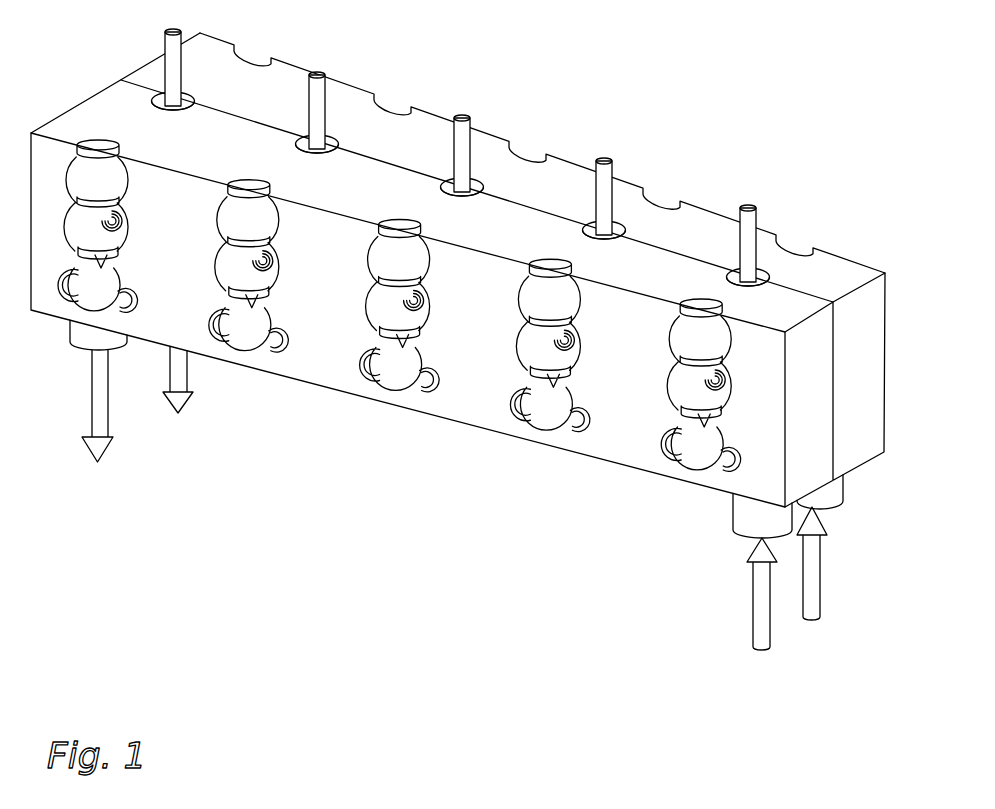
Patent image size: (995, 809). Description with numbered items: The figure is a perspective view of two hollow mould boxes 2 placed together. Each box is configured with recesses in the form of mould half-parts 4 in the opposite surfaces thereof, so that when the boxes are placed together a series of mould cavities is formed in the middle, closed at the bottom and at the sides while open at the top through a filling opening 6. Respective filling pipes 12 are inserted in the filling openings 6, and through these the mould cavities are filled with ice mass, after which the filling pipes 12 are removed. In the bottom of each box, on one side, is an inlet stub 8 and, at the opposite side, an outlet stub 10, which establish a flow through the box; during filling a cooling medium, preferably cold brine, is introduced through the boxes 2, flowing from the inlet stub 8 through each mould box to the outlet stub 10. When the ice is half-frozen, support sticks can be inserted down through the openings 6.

The mould box 2 is at (803, 312).
The mould half-part 4 is at (380, 308).
The filling opening 6 is at (620, 220).
The inlet stub 8 is at (835, 488).
The outlet stub 10 is at (80, 330).
The filling pipe 12 is at (463, 147).